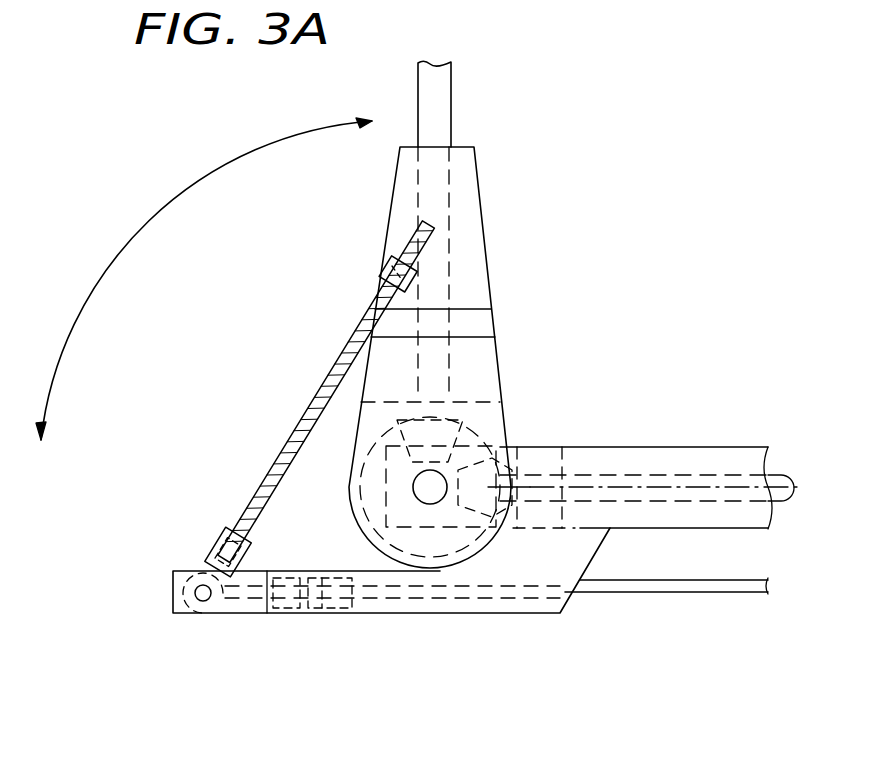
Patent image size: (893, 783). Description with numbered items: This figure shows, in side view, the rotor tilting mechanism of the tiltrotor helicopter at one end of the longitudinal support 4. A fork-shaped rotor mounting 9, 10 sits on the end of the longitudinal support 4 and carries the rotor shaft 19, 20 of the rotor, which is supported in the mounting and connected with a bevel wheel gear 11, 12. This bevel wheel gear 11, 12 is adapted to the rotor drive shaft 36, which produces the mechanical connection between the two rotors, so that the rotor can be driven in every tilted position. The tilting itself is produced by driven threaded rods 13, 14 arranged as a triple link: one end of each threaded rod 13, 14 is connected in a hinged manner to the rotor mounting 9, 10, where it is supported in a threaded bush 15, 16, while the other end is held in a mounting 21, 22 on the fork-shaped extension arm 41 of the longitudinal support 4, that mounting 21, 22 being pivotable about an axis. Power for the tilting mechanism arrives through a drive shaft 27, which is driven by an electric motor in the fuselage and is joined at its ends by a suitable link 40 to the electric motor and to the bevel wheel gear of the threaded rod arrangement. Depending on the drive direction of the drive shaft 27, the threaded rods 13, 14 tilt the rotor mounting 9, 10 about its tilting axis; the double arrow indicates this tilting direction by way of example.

The longitudinal support 4 is at (706, 455).
The rotor mounting 9 is at (448, 357).
The rotor mounting 10 is at (473, 220).
The bevel wheel gear 11 is at (479, 464).
The bevel wheel gear 12 is at (495, 465).
The threaded rod 13 is at (326, 392).
The threaded rod 14 is at (340, 355).
The threaded bush 15 is at (349, 271).
The threaded bush 16 is at (384, 270).
The rotor shaft 19 is at (483, 229).
The rotor shaft 20 is at (445, 80).
The mounting 21 is at (179, 545).
The mounting 22 is at (208, 542).
The drive shaft 27 is at (668, 595).
The rotor drive shaft 36 is at (785, 446).
The link 40 is at (330, 612).
The base plate 41 is at (476, 613).